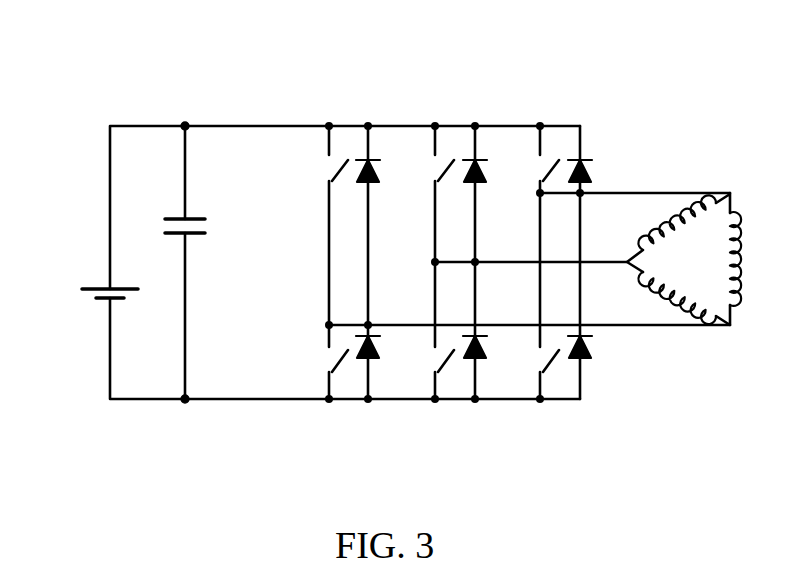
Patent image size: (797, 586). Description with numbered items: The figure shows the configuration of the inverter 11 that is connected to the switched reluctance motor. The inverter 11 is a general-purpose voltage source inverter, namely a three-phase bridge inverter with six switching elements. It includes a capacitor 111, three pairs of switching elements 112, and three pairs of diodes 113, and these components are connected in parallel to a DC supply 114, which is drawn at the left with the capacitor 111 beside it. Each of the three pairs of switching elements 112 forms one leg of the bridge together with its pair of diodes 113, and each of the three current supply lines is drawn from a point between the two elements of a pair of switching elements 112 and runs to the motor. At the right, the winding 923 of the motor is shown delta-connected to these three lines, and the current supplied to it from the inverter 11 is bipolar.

The inverter 11 is at (134, 83).
The capacitor 111 is at (206, 257).
The switching elements 112 is at (306, 172).
The diodes 113 is at (390, 141).
The DC supply 114 is at (82, 271).
The winding 923 is at (729, 132).